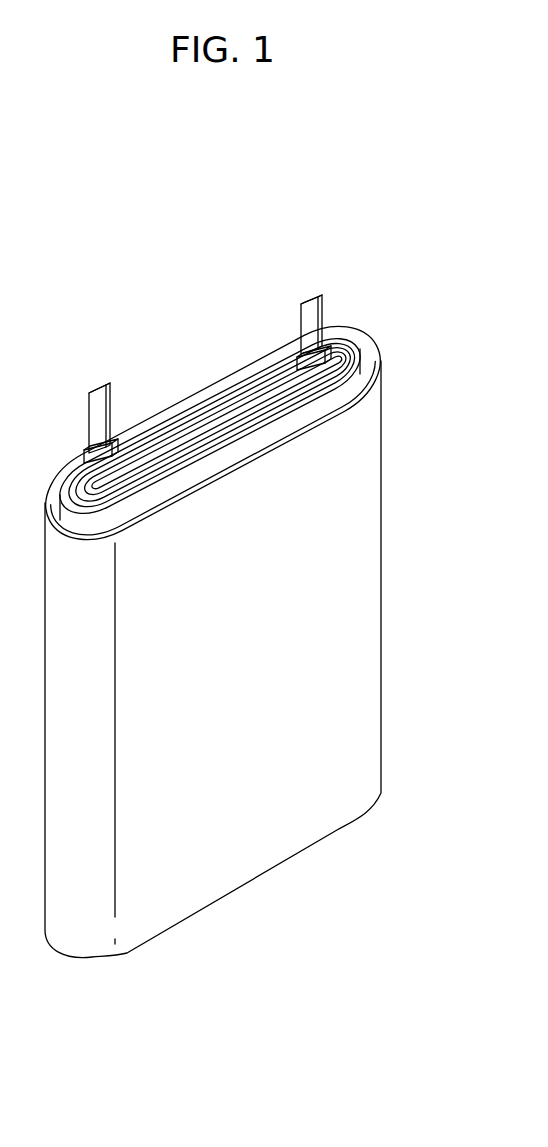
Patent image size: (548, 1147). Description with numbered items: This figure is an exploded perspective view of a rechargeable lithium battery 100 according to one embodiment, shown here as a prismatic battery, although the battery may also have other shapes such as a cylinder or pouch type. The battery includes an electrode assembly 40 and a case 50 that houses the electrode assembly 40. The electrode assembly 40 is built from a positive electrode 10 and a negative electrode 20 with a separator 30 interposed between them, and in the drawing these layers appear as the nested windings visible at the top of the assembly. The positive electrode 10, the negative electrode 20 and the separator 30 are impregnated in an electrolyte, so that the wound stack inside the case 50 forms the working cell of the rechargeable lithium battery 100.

The rechargeable lithium battery 100 is at (234, 255).
The positive electrode 10 is at (362, 338).
The negative electrode 20 is at (337, 340).
The separator 30 is at (352, 334).
The electrode assembly 40 is at (201, 367).
The case 50 is at (363, 536).